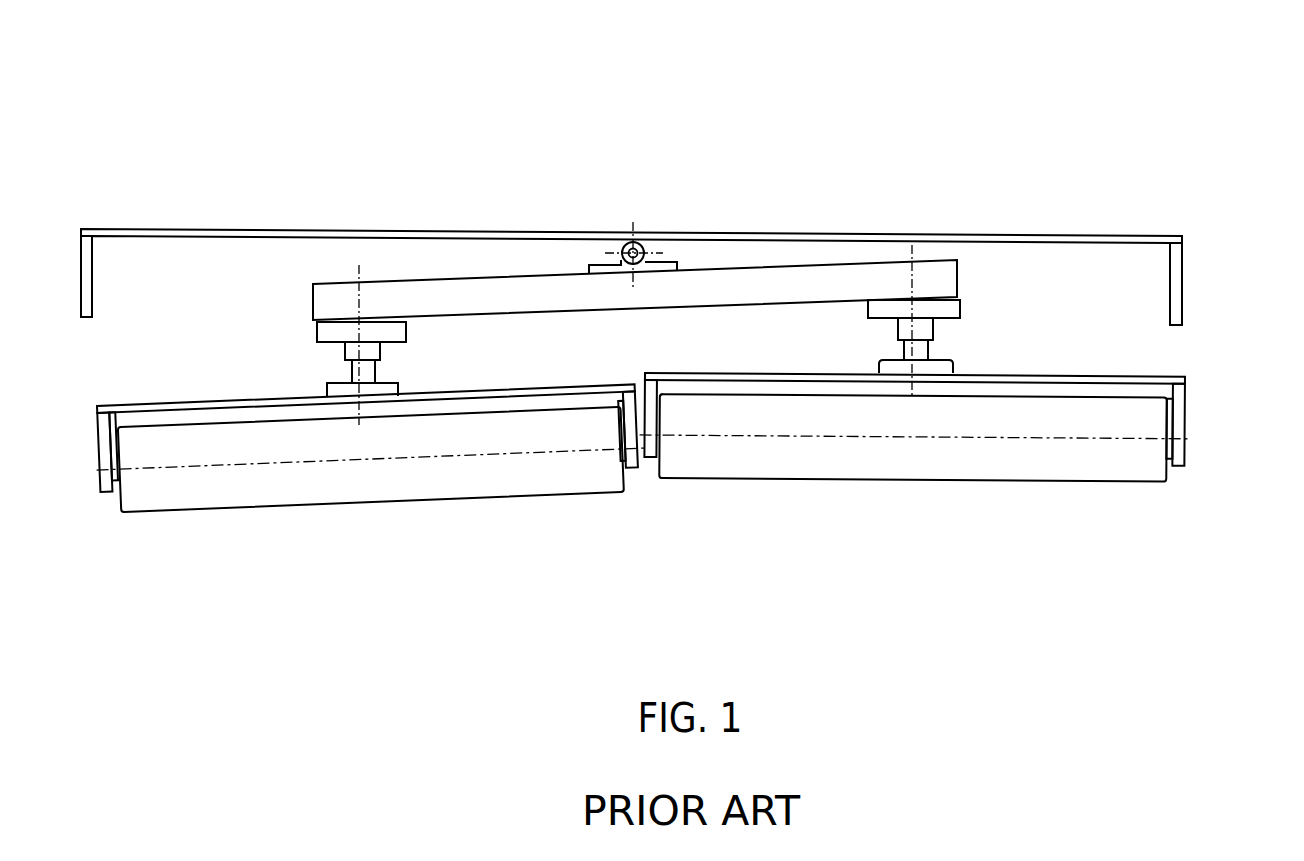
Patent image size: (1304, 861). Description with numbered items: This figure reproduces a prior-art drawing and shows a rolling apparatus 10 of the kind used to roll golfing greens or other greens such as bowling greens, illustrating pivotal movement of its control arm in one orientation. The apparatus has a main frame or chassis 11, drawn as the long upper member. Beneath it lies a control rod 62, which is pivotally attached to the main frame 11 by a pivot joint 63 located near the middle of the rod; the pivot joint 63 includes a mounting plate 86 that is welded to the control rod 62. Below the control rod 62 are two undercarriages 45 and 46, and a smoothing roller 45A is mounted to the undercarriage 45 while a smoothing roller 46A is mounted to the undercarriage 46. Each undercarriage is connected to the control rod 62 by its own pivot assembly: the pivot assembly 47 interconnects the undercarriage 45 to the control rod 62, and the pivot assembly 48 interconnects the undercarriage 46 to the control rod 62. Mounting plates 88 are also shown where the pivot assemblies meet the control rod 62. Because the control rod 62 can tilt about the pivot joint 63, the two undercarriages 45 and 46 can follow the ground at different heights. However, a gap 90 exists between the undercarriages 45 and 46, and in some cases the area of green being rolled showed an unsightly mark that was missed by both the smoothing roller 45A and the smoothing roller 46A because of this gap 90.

The rolling apparatus 10 is at (948, 148).
The main frame 11 is at (307, 207).
The undercarriage 45 is at (97, 476).
The smoothing roller 45A is at (343, 485).
The undercarriage 46 is at (1180, 463).
The smoothing roller 46A is at (893, 455).
The pivot assembly 47 is at (400, 383).
The pivot assembly 48 is at (944, 348).
The control rod 62 is at (612, 300).
The pivot joint 63 is at (621, 249).
The mounting plate 86 is at (677, 265).
The mounting plates 88 is at (317, 326).
The gap 90 is at (665, 483).